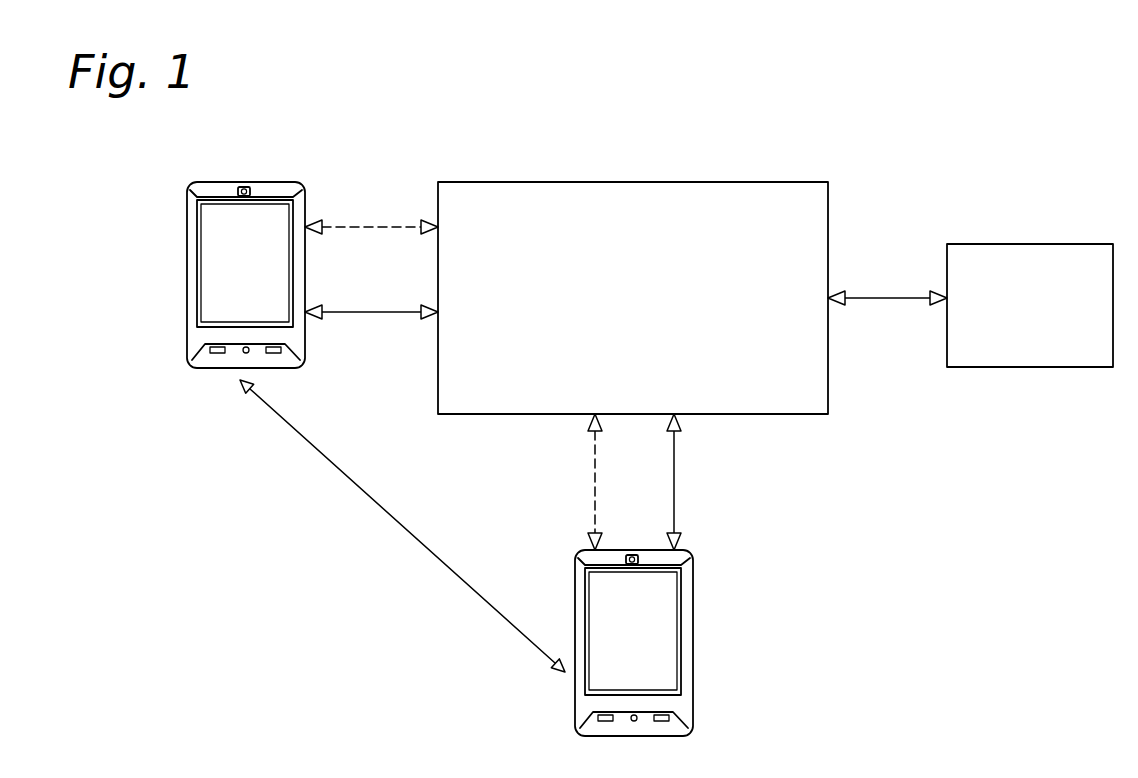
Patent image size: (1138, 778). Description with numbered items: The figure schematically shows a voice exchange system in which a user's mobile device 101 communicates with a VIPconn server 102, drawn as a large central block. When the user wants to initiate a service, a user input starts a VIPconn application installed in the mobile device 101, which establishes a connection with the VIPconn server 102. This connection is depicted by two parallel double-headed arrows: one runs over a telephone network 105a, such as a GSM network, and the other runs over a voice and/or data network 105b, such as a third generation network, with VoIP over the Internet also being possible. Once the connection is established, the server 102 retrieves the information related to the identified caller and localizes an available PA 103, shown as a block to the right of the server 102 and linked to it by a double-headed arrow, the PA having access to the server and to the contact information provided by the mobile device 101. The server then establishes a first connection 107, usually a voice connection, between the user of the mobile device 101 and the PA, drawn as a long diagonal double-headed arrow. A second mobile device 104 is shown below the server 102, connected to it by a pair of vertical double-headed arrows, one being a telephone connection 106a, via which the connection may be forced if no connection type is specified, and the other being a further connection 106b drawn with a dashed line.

The mobile device 101 is at (272, 187).
The VIPconn server 102 is at (768, 188).
The PA 103 is at (1075, 262).
The second mobile terminal 104 is at (690, 630).
The telephone network 105a is at (390, 311).
The voice and/or data network 105b is at (390, 226).
The telephone 106a is at (678, 482).
The communication path (second terminal, dashed) 106b is at (595, 483).
The first connection 107 is at (387, 513).